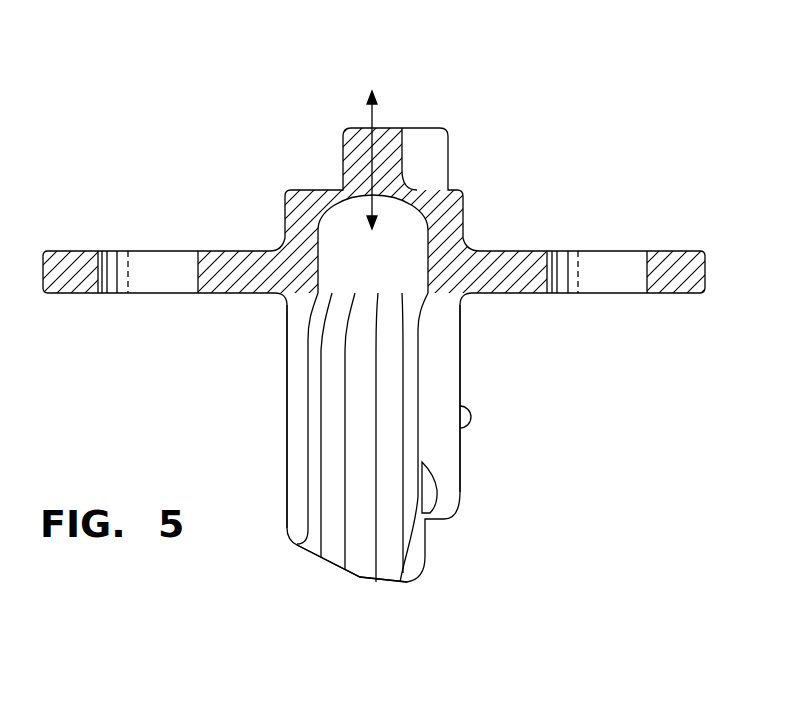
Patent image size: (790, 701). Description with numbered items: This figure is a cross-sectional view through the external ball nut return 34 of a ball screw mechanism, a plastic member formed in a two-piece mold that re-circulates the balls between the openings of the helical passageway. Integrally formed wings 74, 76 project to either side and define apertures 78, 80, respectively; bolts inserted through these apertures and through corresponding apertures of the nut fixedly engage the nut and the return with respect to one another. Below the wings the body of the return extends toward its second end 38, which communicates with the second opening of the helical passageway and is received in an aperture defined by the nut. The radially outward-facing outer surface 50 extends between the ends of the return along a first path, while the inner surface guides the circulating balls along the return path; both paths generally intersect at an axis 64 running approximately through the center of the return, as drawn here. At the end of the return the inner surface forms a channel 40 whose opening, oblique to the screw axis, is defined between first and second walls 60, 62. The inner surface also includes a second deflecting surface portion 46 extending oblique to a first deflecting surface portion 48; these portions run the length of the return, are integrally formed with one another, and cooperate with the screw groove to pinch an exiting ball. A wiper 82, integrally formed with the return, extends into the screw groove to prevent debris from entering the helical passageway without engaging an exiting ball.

The external ball nut return 34 is at (330, 92).
The second end 38 is at (294, 576).
The channel 40 is at (370, 583).
The second deflecting surface portion 46 is at (332, 558).
The first deflecting surface portion 48 is at (393, 568).
The outer surface 50 is at (463, 205).
The first wall 60 is at (412, 468).
The second wall 62 is at (307, 420).
The axis 64 is at (372, 122).
The wing 74 is at (75, 251).
The wing 76 is at (680, 252).
The aperture 78 is at (105, 293).
The aperture 80 is at (638, 293).
The wiper 82 is at (453, 442).